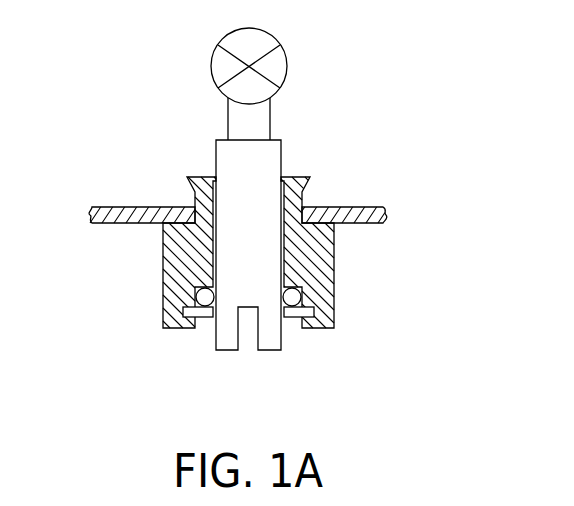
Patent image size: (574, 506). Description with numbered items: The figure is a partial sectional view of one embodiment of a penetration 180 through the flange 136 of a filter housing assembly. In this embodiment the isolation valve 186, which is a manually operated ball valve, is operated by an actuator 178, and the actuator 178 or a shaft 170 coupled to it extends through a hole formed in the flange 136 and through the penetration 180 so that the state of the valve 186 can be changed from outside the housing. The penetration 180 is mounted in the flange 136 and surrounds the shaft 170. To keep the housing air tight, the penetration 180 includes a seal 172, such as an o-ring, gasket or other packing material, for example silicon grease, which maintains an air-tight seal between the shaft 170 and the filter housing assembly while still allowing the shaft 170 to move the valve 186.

The isolation valve 186 is at (288, 63).
The actuator 178 is at (228, 117).
The shaft 170 is at (260, 163).
The flange 136 is at (362, 207).
The penetration 180 is at (140, 287).
The seal 172 is at (298, 293).